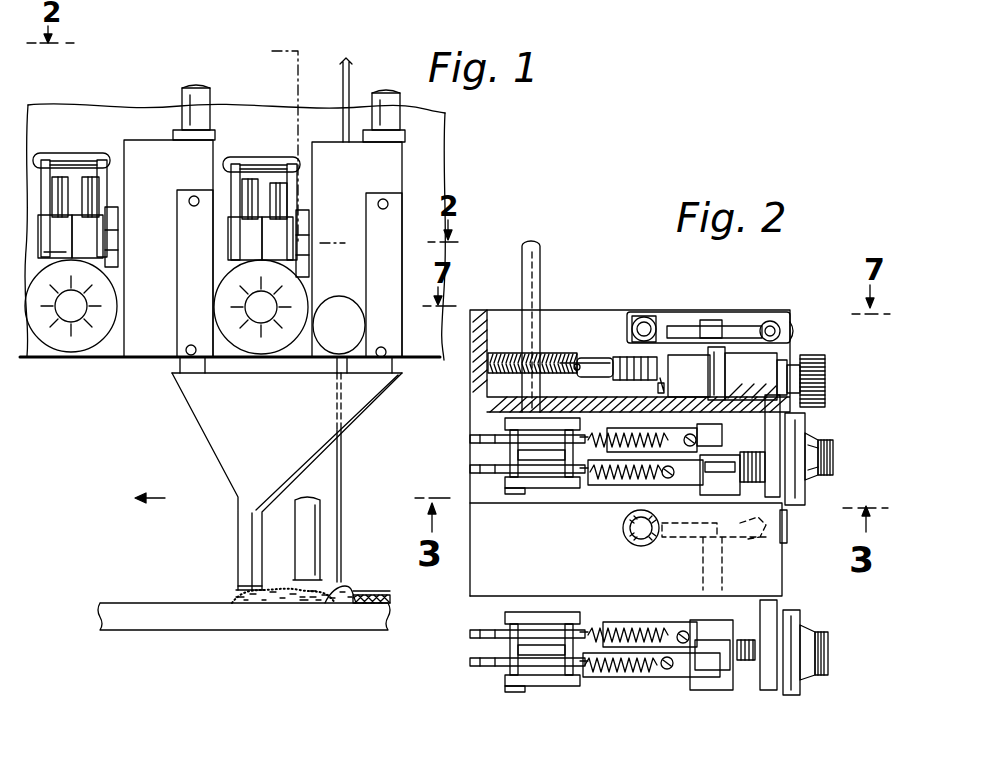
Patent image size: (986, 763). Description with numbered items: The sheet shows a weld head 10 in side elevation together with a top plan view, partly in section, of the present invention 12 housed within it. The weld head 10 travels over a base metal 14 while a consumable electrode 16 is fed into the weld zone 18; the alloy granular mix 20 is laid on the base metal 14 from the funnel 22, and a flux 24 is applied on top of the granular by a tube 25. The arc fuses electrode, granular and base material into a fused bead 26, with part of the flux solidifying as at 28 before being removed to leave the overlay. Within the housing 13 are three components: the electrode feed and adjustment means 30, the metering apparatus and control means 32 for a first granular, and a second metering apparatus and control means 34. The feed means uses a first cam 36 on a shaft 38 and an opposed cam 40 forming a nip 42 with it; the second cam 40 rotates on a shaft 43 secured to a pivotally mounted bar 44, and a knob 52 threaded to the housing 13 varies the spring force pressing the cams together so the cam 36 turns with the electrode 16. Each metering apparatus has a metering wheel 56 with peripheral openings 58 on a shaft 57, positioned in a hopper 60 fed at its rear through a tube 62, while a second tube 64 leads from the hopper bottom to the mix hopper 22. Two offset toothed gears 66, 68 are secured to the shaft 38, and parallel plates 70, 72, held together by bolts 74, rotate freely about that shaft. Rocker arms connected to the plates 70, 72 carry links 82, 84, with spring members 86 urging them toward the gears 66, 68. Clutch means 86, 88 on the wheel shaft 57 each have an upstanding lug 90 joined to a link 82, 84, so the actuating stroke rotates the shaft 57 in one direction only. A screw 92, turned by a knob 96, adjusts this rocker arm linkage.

In FIG. 1, the weld head 10 is at (415, 146).
In FIG. 1, the present invention 12 is at (120, 373).
In FIG. 2, the housing 13 is at (783, 553).
In FIG. 1, the base metal 14 is at (146, 622).
In FIG. 1, the consumable electrode 16 is at (340, 88).
In FIG. 2, the consumable electrode 16 is at (583, 357).
In FIG. 1, the weld zone 18 is at (346, 584).
In FIG. 1, the alloy granular mix 20 is at (282, 597).
In FIG. 1, the funnel 22 is at (282, 425).
In FIG. 1, the flux 24 is at (311, 600).
In FIG. 1, the tube 25 is at (318, 531).
In FIG. 1, the fused bead 26 is at (386, 604).
In FIG. 1, the solidified flux 28 is at (386, 591).
In FIG. 2, the electrode feed and adjustment means 30 is at (828, 352).
In FIG. 2, the metering apparatus and control means 32 is at (861, 353).
In FIG. 2, the second metering apparatus and control means 34 is at (840, 697).
In FIG. 2, the first wheel or cam 36 is at (545, 355).
In FIG. 2, the shaft 38 is at (540, 256).
In FIG. 2, the opposed cam 40 is at (595, 356).
In FIG. 2, the nip 42 is at (577, 376).
In FIG. 2, the shaft 43 is at (598, 372).
In FIG. 2, the bar 44 is at (662, 396).
In FIG. 1, the knob 52 is at (352, 336).
In FIG. 2, the knob 52 is at (813, 354).
In FIG. 2, the metering wheel 56 is at (703, 316).
In FIG. 1, the shaft 57 is at (218, 246).
In FIG. 2, the shaft 57 is at (720, 380).
In FIG. 2, the openings 58 is at (724, 334).
In FIG. 2, the hopper 60 is at (660, 313).
In FIG. 1, the tube 62 is at (183, 93).
In FIG. 2, the tube 62 is at (632, 313).
In FIG. 2, the second tube 64 is at (767, 318).
In FIG. 2, the toothed gear member 66 is at (475, 438).
In FIG. 2, the toothed gear member 68 is at (477, 467).
In FIG. 2, the plate 70 is at (503, 420).
In FIG. 2, the plate 72 is at (478, 474).
In FIG. 2, the bolts 74 is at (575, 498).
In FIG. 2, the link 82 is at (641, 440).
In FIG. 2, the link 84 is at (614, 487).
In FIG. 1, the spring members 86 is at (90, 240).
In FIG. 2, the spring members 86 is at (637, 430).
In FIG. 1, the clutch means 88 is at (166, 206).
In FIG. 2, the clutch means 88 is at (695, 688).
In FIG. 2, the upstanding lug 90 is at (735, 482).
In FIG. 2, the screw 92 is at (752, 660).
In FIG. 1, the knob 96 is at (255, 302).
In FIG. 2, the knob 96 is at (822, 678).